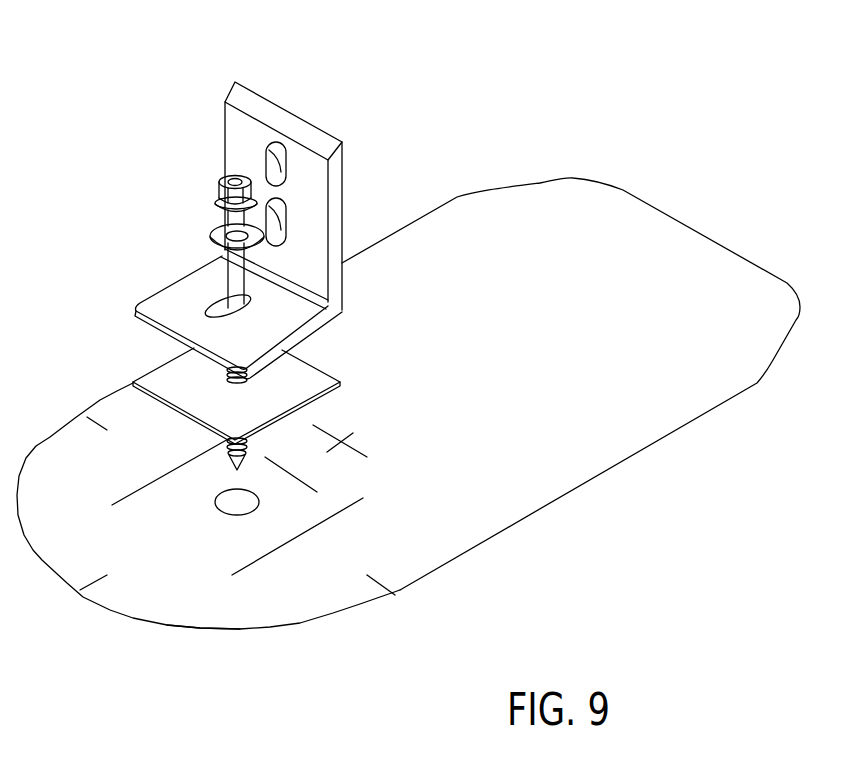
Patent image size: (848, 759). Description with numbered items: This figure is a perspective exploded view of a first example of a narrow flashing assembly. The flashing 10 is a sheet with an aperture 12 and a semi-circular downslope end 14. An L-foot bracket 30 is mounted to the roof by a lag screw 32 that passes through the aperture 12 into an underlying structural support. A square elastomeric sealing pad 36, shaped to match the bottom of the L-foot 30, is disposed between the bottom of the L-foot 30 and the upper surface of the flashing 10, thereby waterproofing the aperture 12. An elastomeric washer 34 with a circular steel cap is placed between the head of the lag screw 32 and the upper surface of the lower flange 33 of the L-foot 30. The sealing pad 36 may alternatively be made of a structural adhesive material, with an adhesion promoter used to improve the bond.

The flashing 10 is at (603, 243).
The aperture 12 is at (230, 502).
The downslope end 14 is at (201, 630).
The L-foot bracket 30 is at (242, 208).
The lag screw 32 is at (220, 177).
The lower flange 33 is at (192, 292).
The washer 34 is at (217, 230).
The sealing pad 36 is at (165, 373).